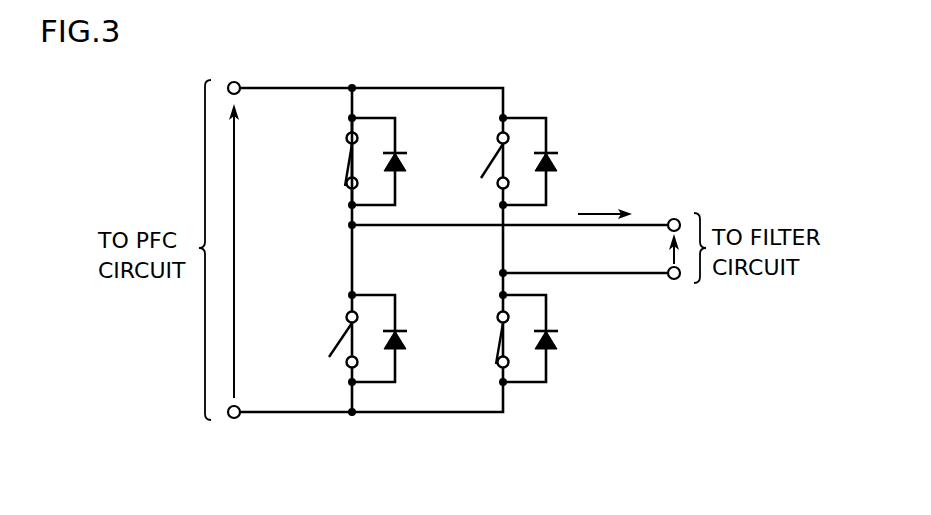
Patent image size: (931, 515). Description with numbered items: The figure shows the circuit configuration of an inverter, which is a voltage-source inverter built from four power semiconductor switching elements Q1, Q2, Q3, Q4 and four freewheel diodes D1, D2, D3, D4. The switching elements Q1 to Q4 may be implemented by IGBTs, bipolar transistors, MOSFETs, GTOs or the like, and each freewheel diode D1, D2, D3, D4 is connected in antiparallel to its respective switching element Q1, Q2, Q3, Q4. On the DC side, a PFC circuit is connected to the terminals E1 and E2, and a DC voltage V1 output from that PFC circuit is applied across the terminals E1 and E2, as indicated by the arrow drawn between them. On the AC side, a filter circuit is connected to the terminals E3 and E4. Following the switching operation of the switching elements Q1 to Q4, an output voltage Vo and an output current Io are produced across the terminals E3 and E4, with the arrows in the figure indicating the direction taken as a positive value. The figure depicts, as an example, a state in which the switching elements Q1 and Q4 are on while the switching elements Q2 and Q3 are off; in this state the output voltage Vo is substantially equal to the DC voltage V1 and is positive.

The terminal E1 is at (234, 81).
The terminal E2 is at (234, 419).
The terminal E3 is at (674, 218).
The terminal E4 is at (674, 280).
The switching element Q1 is at (346, 160).
The switching element Q2 is at (492, 153).
The switching element Q3 is at (343, 338).
The switching element Q4 is at (497, 332).
The freewheel diode D1 is at (398, 160).
The freewheel diode D2 is at (549, 162).
The freewheel diode D3 is at (398, 338).
The freewheel diode D4 is at (549, 338).
The DC voltage V1 is at (250, 251).
The output voltage Vo is at (655, 250).
The output current Io is at (605, 203).